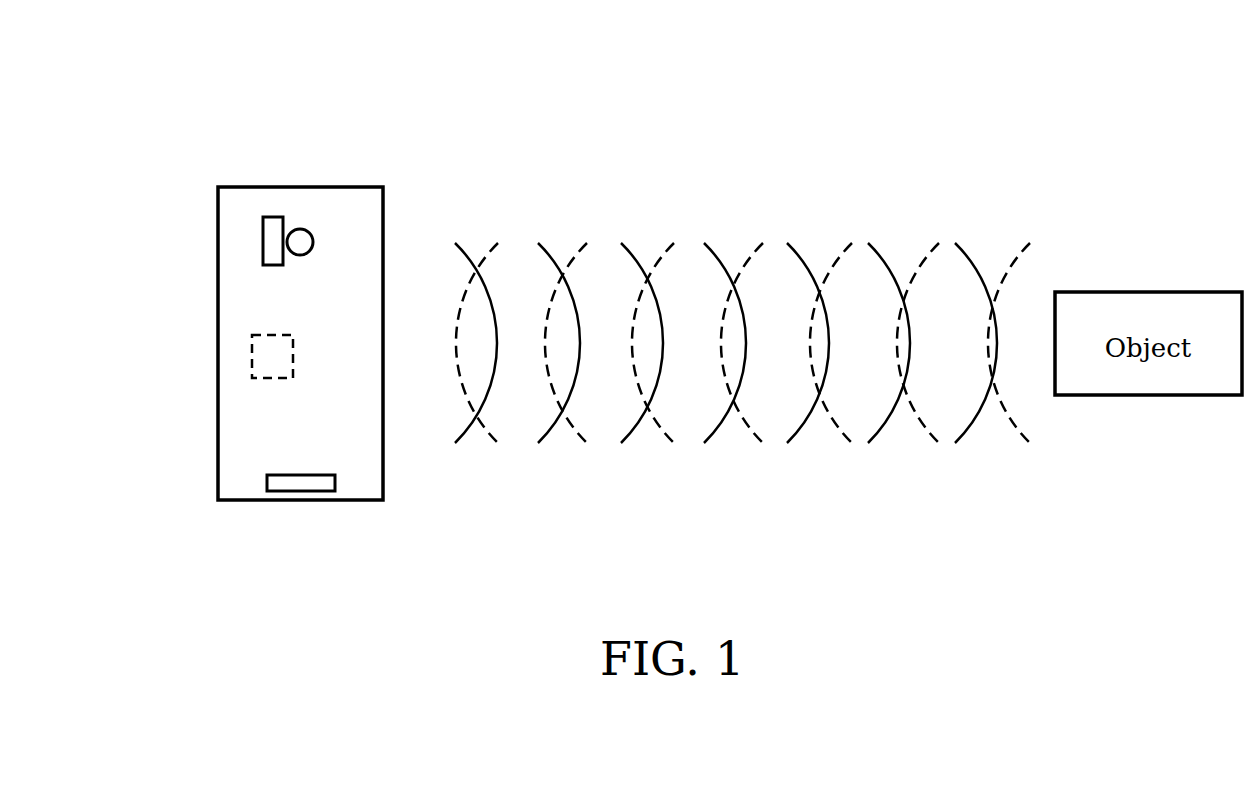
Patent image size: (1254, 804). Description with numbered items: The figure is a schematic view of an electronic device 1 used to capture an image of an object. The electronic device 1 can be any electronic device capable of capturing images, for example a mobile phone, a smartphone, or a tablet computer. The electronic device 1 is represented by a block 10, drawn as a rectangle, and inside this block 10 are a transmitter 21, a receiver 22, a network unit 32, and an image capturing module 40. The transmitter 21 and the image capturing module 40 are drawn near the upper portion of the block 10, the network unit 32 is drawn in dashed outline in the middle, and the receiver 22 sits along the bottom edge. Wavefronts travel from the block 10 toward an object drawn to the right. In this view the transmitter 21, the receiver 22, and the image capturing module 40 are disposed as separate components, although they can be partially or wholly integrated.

The electronic device 1 is at (152, 94).
The block 10 is at (356, 186).
The transmitter 21 is at (262, 240).
The receiver 22 is at (300, 483).
The network unit 32 is at (252, 360).
The image capturing module 40 is at (300, 228).